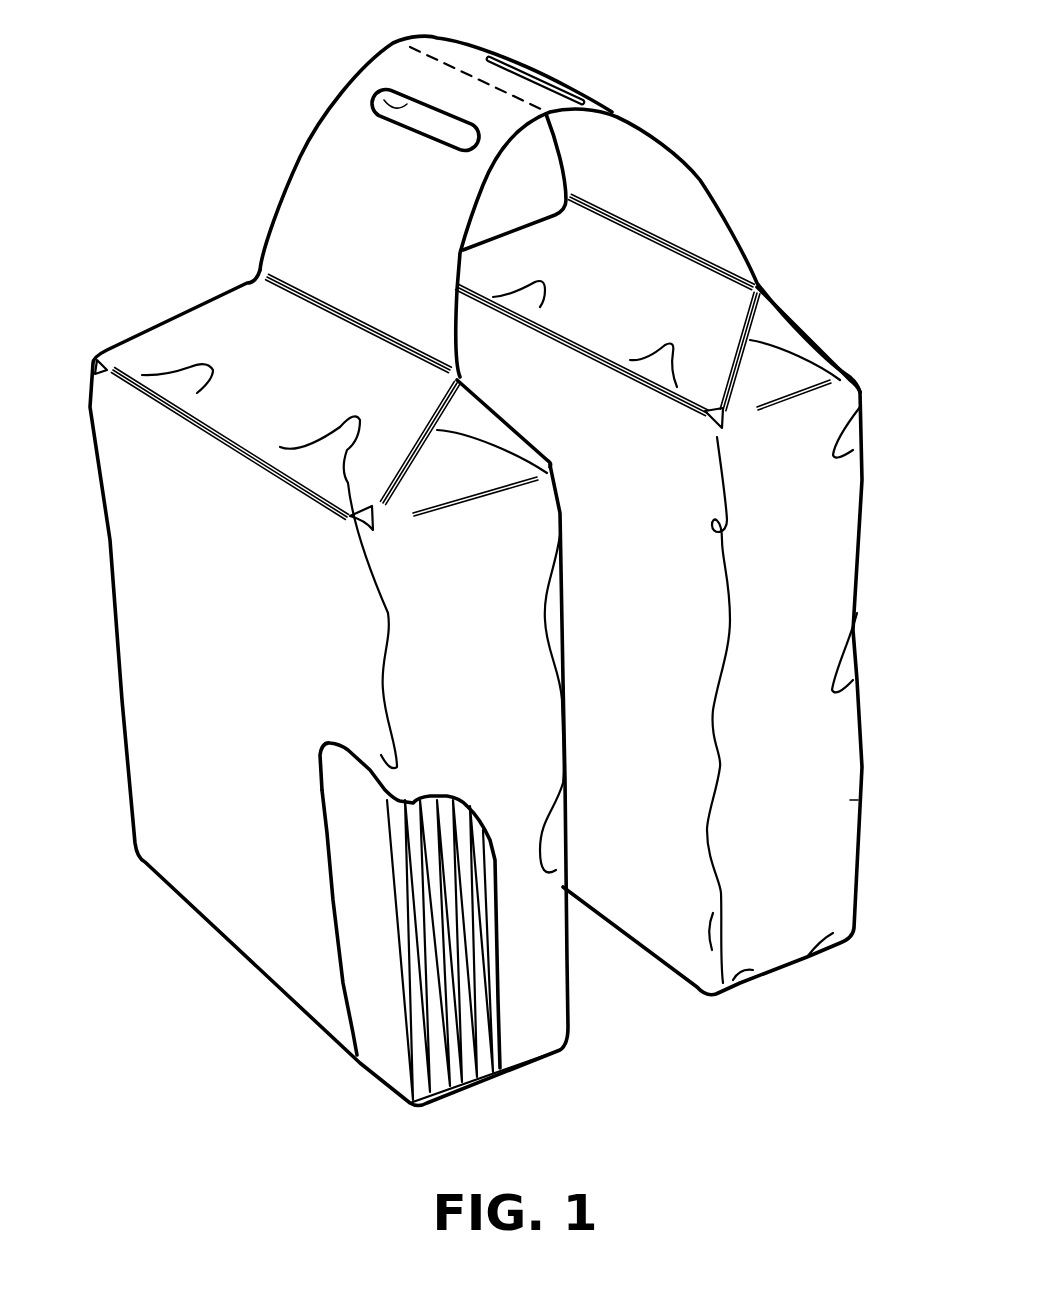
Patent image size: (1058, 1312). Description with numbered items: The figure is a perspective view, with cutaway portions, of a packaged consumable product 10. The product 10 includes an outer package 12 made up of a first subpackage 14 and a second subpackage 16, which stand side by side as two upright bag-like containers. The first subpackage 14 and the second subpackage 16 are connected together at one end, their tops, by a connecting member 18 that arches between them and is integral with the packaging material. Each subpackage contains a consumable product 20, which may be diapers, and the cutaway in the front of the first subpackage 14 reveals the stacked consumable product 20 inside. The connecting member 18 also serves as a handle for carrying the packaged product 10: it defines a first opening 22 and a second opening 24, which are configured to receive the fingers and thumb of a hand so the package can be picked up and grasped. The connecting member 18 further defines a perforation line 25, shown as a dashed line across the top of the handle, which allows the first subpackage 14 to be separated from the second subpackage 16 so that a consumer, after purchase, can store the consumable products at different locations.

The packaged consumable product 10 is at (493, 565).
The outer package 12 is at (837, 542).
The first subpackage 14 is at (183, 790).
The second subpackage 16 is at (830, 805).
The connecting member 18 is at (722, 200).
The consumable product 20 is at (398, 1060).
The first opening 22 is at (373, 97).
The second opening 24 is at (533, 73).
The perforation line 25 is at (463, 65).